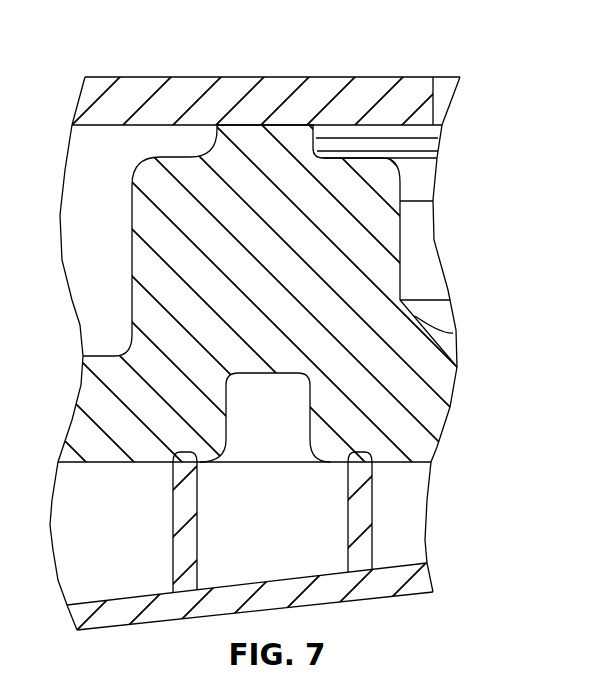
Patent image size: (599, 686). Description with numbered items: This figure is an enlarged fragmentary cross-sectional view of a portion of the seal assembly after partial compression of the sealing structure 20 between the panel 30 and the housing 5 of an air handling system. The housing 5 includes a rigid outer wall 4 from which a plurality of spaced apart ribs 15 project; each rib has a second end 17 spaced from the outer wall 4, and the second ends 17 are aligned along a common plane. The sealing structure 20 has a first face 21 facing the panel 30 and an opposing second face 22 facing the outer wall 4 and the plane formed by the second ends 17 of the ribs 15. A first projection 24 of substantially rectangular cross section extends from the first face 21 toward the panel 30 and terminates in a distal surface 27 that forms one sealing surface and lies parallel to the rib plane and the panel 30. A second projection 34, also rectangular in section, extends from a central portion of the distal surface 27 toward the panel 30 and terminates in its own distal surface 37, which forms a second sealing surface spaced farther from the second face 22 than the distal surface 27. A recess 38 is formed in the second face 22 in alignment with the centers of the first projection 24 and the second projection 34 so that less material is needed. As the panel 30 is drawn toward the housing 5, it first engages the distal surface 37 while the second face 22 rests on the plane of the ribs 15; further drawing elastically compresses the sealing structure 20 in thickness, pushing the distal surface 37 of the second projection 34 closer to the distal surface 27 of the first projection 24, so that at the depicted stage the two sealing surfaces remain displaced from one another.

The outer wall 4 is at (253, 598).
The housing 5 is at (335, 587).
The ribs 15 is at (355, 495).
The second end 17 is at (172, 453).
The sealing structure 20 is at (432, 390).
The first face 21 is at (433, 82).
The second face 22 is at (403, 463).
The first projection 24 is at (185, 257).
The distal surface 27 is at (185, 157).
The panel 30 is at (203, 97).
The second projection 34 is at (349, 155).
The distal surface 37 is at (271, 148).
The recess 38 is at (251, 434).